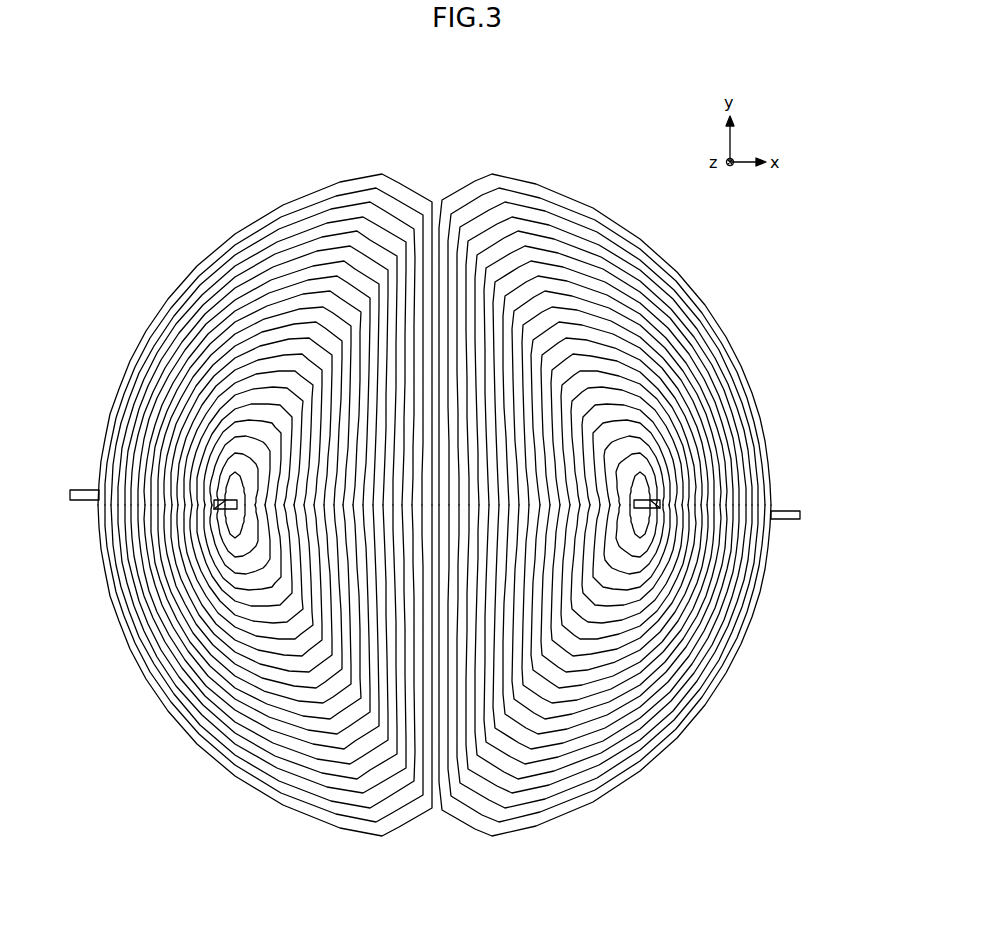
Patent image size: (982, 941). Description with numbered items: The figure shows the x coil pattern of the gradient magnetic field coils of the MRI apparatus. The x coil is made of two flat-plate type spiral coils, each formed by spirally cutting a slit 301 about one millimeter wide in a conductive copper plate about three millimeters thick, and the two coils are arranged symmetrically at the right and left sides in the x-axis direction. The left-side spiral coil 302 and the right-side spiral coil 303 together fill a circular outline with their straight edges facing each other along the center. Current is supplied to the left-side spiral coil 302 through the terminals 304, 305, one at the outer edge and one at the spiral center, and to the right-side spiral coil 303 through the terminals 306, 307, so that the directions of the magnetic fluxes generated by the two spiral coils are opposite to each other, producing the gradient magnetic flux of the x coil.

The slit 301 is at (434, 536).
The left-side spiral coil 302 is at (249, 788).
The right-side spiral coil 303 is at (558, 820).
The terminal 304 is at (84, 490).
The terminal 305 is at (216, 508).
The terminal 306 is at (657, 498).
The terminal 307 is at (800, 513).